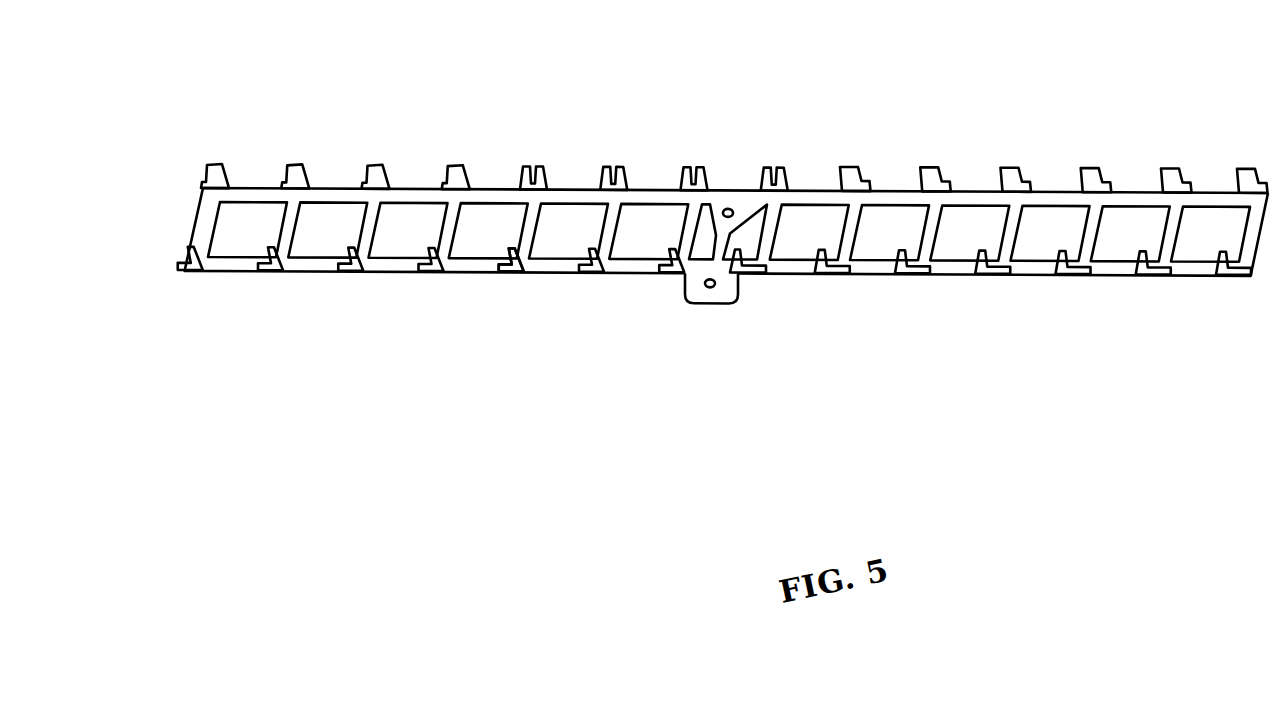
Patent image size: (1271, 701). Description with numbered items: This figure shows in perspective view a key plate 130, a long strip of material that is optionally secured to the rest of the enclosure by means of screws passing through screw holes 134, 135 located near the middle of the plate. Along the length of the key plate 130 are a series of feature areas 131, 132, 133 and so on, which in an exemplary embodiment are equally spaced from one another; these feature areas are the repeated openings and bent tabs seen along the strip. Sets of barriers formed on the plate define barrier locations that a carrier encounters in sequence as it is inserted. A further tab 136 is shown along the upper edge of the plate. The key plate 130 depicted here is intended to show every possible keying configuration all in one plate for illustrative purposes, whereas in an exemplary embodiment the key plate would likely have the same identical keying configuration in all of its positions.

The key plate 130 is at (706, 55).
The feature area 131 is at (355, 273).
The feature area 132 is at (438, 273).
The feature area 133 is at (517, 273).
The screw hole 134 is at (712, 293).
The screw hole 135 is at (745, 203).
The upper tab 136 is at (1008, 167).